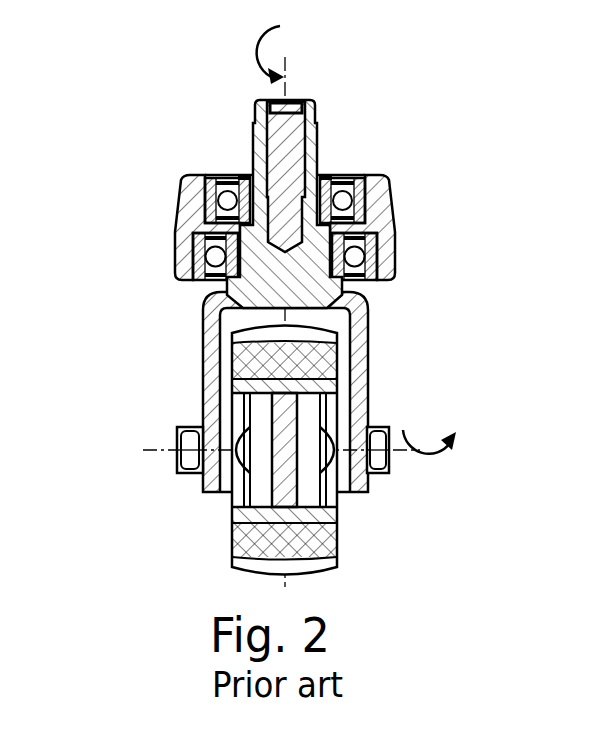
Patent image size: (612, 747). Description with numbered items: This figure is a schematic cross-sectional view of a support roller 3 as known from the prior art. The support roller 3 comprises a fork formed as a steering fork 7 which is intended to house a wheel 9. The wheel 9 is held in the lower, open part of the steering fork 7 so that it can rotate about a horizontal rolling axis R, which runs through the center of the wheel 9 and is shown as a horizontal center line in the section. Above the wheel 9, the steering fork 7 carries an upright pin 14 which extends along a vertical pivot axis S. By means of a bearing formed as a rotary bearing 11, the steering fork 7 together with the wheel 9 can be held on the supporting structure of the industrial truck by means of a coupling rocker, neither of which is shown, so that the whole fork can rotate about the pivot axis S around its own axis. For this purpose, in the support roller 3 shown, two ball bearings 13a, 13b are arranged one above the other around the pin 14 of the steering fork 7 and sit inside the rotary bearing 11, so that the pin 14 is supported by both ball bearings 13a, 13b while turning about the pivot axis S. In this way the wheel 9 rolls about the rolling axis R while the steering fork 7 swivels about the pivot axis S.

The support roller 3 is at (218, 392).
The steering fork 7 is at (195, 405).
The wheel 9 is at (312, 416).
The rotary bearing 11 is at (390, 223).
The ball bearing 13a is at (195, 200).
The ball bearing 13b is at (178, 235).
The pin 14 is at (245, 283).
The pivot axis S is at (285, 65).
The rolling axis R is at (418, 450).